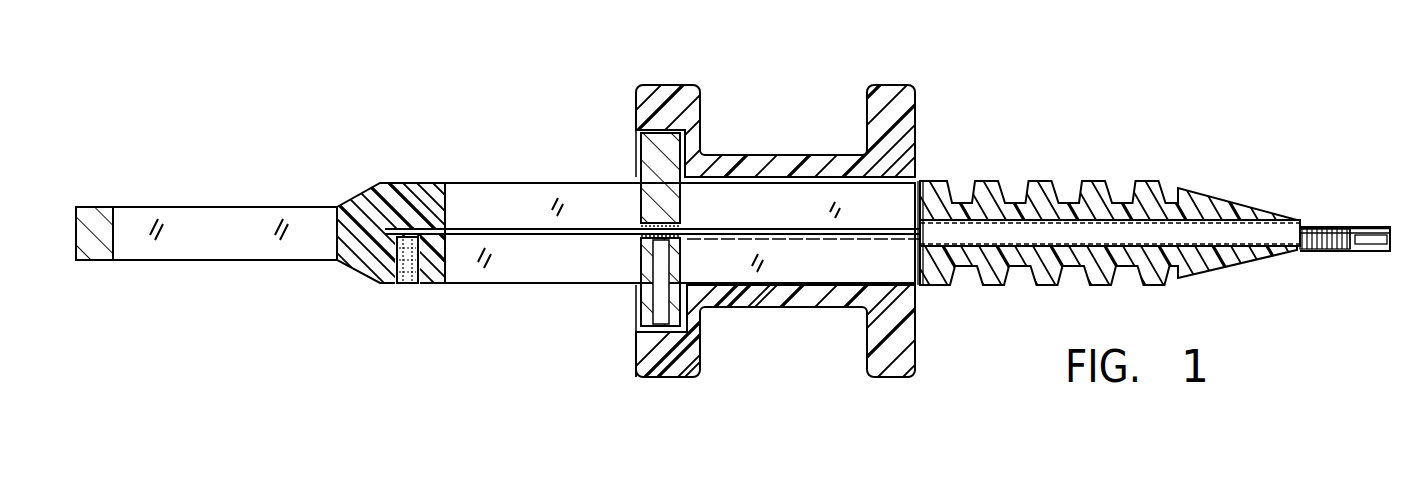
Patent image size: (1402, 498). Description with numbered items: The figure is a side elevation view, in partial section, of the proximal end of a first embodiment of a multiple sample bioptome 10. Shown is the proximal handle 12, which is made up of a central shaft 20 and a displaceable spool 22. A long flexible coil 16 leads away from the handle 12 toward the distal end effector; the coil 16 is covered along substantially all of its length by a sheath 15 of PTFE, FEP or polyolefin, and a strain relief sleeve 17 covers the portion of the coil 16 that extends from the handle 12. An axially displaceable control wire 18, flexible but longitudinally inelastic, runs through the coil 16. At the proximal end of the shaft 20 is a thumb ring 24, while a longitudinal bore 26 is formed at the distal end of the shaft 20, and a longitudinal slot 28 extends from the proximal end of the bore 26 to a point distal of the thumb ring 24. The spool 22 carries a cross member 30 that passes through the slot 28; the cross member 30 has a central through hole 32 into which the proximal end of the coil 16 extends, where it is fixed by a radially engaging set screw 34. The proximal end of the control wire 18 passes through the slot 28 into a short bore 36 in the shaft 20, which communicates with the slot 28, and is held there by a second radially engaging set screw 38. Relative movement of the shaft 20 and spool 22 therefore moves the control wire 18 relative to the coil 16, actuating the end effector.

The multiple sample bioptome 10 is at (270, 311).
The proximal handle 12 is at (501, 354).
The sheath 15 is at (1370, 253).
The flexible coil 16 is at (1340, 253).
The strain relief sleeve 17 is at (1320, 226).
The control wire 18 is at (507, 226).
The central shaft 20 is at (945, 182).
The displaceable spool 22 is at (700, 106).
The thumb ring 24 is at (220, 213).
The longitudinal bore 26 is at (1022, 276).
The longitudinal slot 28 is at (545, 283).
The cross member 30 is at (640, 148).
The central through hole 32 is at (645, 325).
The set screw 34 is at (640, 300).
The short bore 36 is at (405, 220).
The set screw 38 is at (393, 283).